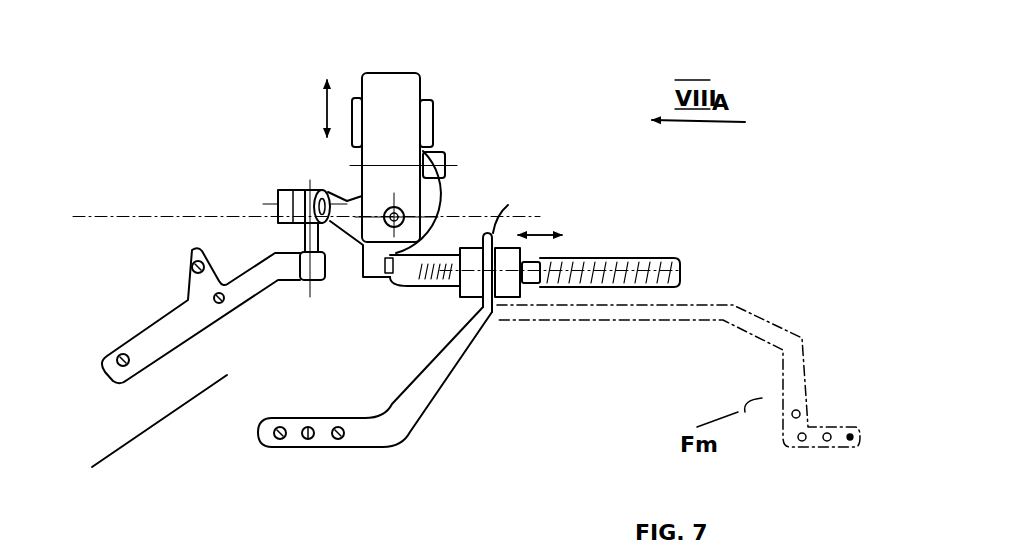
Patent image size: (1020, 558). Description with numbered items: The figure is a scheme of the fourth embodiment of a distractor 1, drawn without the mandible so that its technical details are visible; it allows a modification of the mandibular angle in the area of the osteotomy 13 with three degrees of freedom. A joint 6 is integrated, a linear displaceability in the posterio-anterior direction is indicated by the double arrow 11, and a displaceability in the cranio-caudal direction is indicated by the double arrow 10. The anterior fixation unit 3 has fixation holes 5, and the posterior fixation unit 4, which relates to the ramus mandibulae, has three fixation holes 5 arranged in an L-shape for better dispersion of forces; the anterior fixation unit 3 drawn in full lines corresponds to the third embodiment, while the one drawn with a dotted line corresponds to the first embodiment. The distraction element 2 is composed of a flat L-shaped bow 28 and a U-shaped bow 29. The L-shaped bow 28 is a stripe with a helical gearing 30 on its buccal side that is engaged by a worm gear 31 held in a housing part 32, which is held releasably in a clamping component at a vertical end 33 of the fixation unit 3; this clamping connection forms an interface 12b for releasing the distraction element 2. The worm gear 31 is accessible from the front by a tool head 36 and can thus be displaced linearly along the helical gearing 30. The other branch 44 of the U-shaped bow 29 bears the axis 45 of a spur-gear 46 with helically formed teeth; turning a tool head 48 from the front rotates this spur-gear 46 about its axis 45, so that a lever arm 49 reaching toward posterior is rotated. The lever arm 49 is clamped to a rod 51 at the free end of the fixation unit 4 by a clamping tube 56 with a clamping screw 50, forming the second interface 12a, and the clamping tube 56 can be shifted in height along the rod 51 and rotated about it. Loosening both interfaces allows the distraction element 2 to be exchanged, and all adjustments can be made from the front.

The distractor 1 is at (573, 117).
The distraction element 2 is at (432, 83).
The anterior fixation unit 3 is at (433, 380).
The posterior fixation unit 4 is at (258, 272).
The fixation holes 5 is at (211, 295).
The joint 6 is at (392, 222).
The double arrow 10 is at (325, 110).
The double arrow 11 is at (538, 232).
The second interface 12a is at (291, 236).
The interface 12b is at (508, 205).
The osteotomy 13 is at (155, 425).
The L-shaped bow 28 is at (635, 265).
The U-shaped bow 29 is at (398, 72).
The helical gearing 30 is at (567, 282).
The worm gear 31 is at (455, 290).
The housing part 32 is at (508, 298).
The vertical end 33 is at (483, 307).
The tool head 36 is at (530, 287).
The branch 44 is at (377, 93).
The axis 45 is at (398, 212).
The spur-gear 46 is at (437, 201).
The tool head 48 is at (442, 150).
The lever arm 49 is at (347, 199).
The clamping screw 50 is at (345, 202).
The clamping tube 56 is at (317, 206).
The rod 51 is at (308, 257).